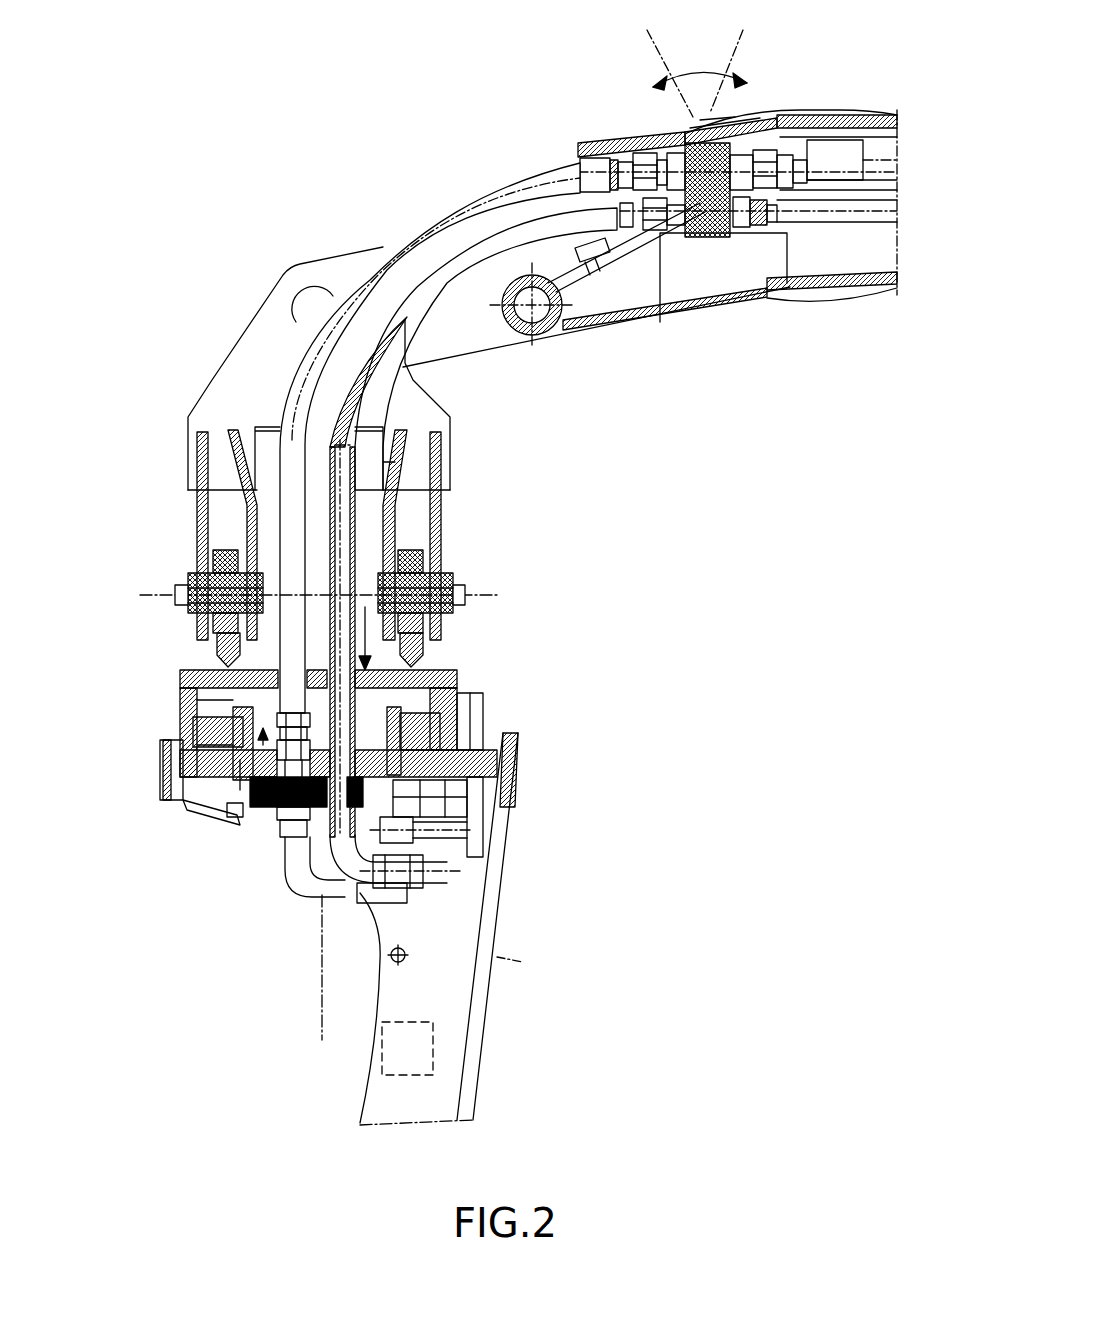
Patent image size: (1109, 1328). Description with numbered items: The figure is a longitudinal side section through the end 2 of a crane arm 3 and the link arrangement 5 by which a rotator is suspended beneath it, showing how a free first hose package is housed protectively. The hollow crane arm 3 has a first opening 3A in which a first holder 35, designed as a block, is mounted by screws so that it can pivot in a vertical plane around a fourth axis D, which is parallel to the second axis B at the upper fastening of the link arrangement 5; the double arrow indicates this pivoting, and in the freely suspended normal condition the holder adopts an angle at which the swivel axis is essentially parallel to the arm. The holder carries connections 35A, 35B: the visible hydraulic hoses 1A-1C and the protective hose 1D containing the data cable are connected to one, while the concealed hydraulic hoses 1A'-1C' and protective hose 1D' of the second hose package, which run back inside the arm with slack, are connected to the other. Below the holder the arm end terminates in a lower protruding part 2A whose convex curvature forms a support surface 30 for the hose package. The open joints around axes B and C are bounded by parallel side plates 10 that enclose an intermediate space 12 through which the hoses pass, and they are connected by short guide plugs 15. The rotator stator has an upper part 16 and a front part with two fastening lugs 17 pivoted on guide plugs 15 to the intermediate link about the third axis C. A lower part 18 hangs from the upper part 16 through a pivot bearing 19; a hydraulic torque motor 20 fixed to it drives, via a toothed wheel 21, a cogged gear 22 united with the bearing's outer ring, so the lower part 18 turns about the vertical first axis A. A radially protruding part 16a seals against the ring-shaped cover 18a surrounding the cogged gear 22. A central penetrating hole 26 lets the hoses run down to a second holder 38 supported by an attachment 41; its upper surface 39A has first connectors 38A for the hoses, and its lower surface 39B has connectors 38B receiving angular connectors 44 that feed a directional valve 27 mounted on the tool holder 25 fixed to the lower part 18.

The crane arm 3 is at (840, 112).
The first opening 3A is at (713, 140).
The fourth axis D is at (706, 157).
The first holder 35 is at (640, 140).
The connection 35A is at (634, 222).
The connection 35B is at (740, 230).
The second hose package hydraulic hoses 1A'-1C' is at (881, 117).
The second hose package protective hose 1D' is at (791, 230).
The end of the crane arm 2 is at (767, 298).
The lower protruding part 2A is at (582, 345).
The support surface 30 is at (500, 315).
The protective hose 1D is at (473, 333).
The hydraulic hoses 1A-1C is at (497, 188).
The intermediate space 12 is at (370, 565).
The side plates 10 is at (248, 365).
The second axis B is at (300, 308).
The link arrangement 5 is at (545, 503).
The third axis C is at (319, 596).
The guide plugs 15 is at (212, 605).
The fastening lugs 17 is at (222, 633).
The penetrating hole 26 is at (450, 580).
The upper part 16 is at (432, 662).
The radially protruding part 16a is at (458, 682).
The cogged gear 22 is at (228, 727).
The first connectors 38A is at (270, 704).
The cover 18a is at (182, 712).
The toothed wheel 21 is at (443, 730).
The upper surface 39A is at (477, 760).
The lower part 18 is at (510, 780).
The hydraulic torque motor 20 is at (445, 803).
The attachment 41 is at (460, 833).
The lower surface 39B is at (467, 867).
The pivot bearing 19 is at (230, 767).
The second holder 38 is at (300, 812).
The connectors 38B is at (285, 860).
The angular connectors 44 is at (333, 878).
The first axis A is at (317, 1007).
The holder 25 is at (450, 1020).
The directional valve 27 is at (420, 1048).